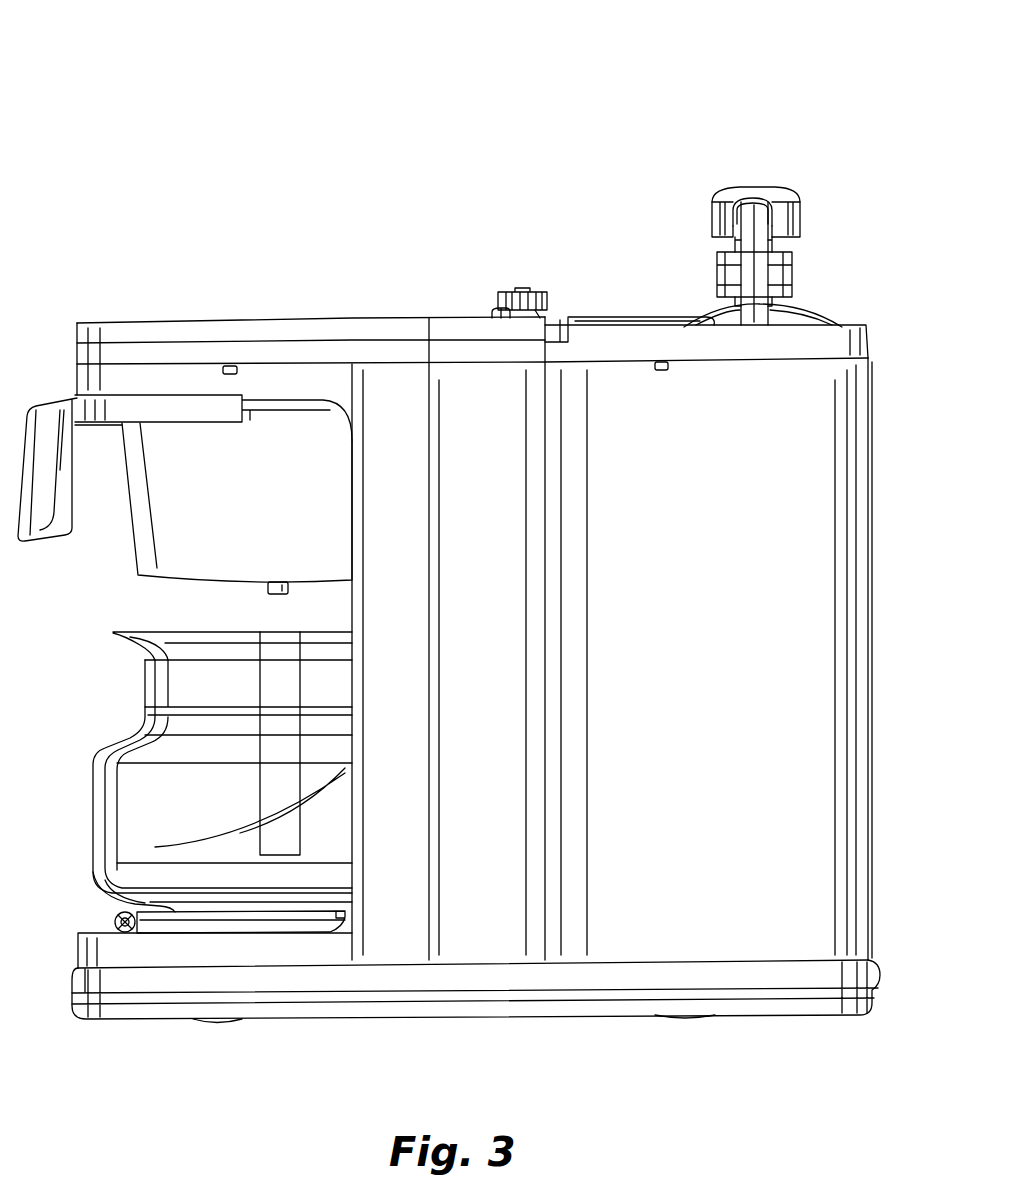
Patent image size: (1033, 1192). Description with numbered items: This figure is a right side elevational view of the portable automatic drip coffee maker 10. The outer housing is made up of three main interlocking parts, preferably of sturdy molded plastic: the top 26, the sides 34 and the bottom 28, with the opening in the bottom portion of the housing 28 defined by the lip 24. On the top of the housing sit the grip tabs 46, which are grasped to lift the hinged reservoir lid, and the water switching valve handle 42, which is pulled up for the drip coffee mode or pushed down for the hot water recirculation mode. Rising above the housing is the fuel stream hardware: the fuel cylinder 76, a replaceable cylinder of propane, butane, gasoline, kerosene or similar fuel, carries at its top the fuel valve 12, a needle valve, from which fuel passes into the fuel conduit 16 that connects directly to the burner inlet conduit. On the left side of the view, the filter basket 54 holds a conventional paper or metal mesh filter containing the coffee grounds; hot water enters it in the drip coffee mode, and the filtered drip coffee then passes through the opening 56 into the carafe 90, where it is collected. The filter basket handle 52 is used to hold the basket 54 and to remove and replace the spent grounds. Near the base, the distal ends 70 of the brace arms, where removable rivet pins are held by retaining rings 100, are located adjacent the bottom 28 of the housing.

The portable automatic drip coffee maker 10 is at (122, 72).
The fuel valve 12 is at (755, 187).
The fuel conduit 16 is at (768, 252).
The lip 24 is at (77, 955).
The top 26 is at (212, 320).
The bottom 28 is at (122, 1021).
The sides 34 is at (716, 654).
The water switching valve handle 42 is at (540, 292).
The grip tabs 46 is at (492, 312).
The filter basket handle 52 is at (33, 420).
The basket 54 is at (126, 540).
The opening 56 is at (262, 589).
The distal ends 70 is at (114, 918).
The fuel cylinder 76 is at (700, 318).
The carafe 90 is at (93, 790).
The retaining ring 100 is at (115, 912).